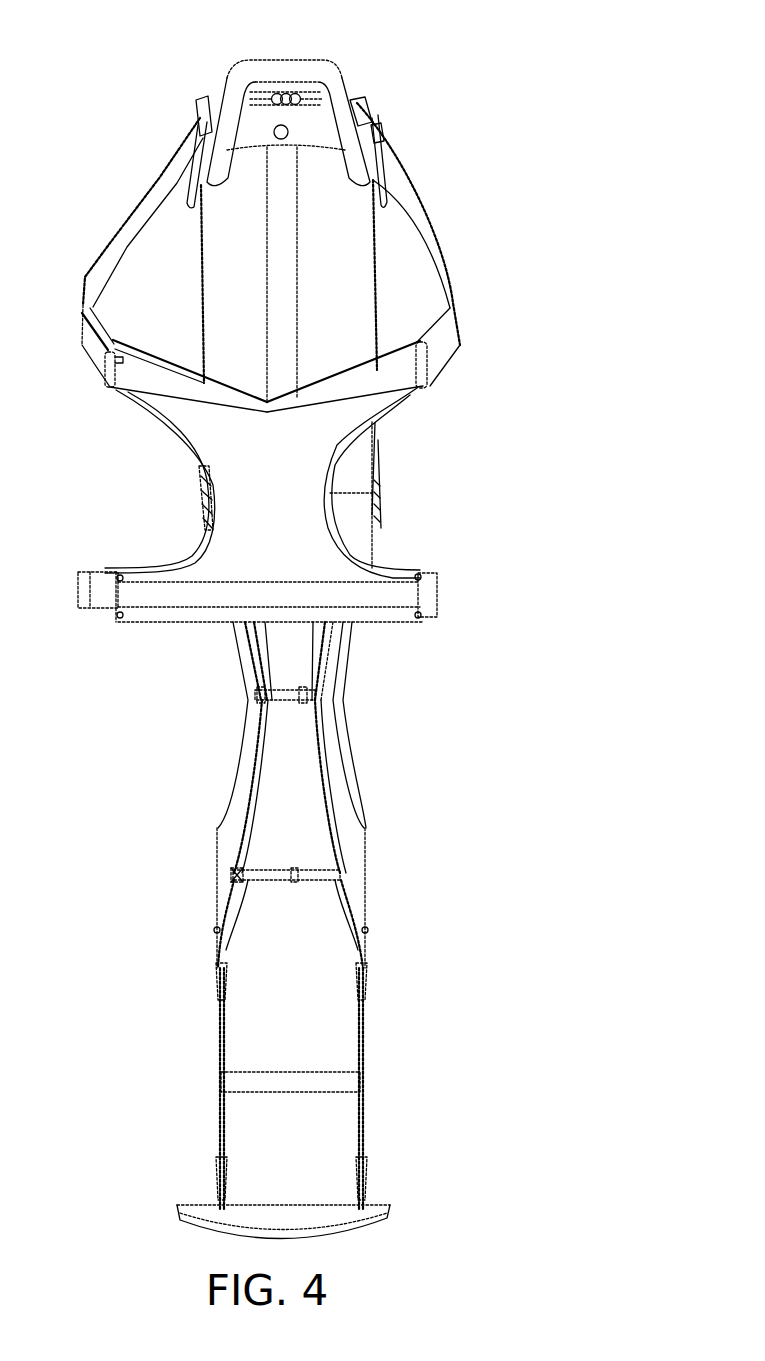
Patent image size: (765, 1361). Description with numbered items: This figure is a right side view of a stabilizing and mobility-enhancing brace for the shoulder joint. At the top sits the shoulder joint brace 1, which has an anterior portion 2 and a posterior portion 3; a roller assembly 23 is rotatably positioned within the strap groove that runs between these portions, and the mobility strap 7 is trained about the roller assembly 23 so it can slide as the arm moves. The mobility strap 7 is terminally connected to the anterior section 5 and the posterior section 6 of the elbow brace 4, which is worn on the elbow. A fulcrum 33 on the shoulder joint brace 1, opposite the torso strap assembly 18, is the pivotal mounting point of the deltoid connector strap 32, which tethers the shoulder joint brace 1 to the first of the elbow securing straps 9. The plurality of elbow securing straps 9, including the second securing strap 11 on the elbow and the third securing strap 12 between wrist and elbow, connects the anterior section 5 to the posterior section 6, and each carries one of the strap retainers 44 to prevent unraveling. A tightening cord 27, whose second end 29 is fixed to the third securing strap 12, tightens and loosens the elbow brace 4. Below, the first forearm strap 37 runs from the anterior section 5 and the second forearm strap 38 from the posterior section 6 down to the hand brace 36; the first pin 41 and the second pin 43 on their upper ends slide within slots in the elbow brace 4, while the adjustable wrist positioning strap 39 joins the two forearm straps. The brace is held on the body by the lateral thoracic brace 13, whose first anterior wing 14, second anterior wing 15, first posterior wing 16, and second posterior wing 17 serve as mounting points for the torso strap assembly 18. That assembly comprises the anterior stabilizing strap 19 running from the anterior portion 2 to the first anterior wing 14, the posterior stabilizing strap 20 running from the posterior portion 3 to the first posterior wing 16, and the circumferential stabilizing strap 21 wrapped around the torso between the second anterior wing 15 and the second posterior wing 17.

The shoulder joint brace 1 is at (250, 58).
The anterior portion 2 is at (360, 100).
The posterior portion 3 is at (205, 128).
The elbow brace 4 is at (360, 642).
The anterior section 5 is at (365, 890).
The posterior section 6 is at (212, 898).
The mobility strap 7 is at (312, 99).
The plurality of elbow securing straps 9 is at (320, 695).
The second securing strap 11 is at (280, 700).
The third securing strap 12 is at (332, 875).
The lateral thoracic brace 13 is at (218, 636).
The first anterior wing 14 is at (400, 390).
The second anterior wing 15 is at (393, 575).
The first posterior wing 16 is at (135, 393).
The second posterior wing 17 is at (137, 578).
The torso strap assembly 18 is at (62, 272).
The anterior stabilizing strap 19 is at (420, 220).
The posterior stabilizing strap 20 is at (122, 227).
The circumferential stabilizing strap 21 is at (103, 597).
The roller assembly 23 is at (322, 84).
The tightening cord 27 is at (245, 678).
The second end 29 is at (250, 880).
The deltoid connector strap 32 is at (275, 253).
The fulcrum 33 is at (283, 139).
The hand brace 36 is at (380, 1215).
The first forearm strap 37 is at (364, 1030).
The second forearm strap 38 is at (219, 1030).
The wrist positioning strap 39 is at (293, 1083).
The first pin 41 is at (368, 928).
The second pin 43 is at (214, 932).
The plurality of strap retainers 44 is at (300, 688).